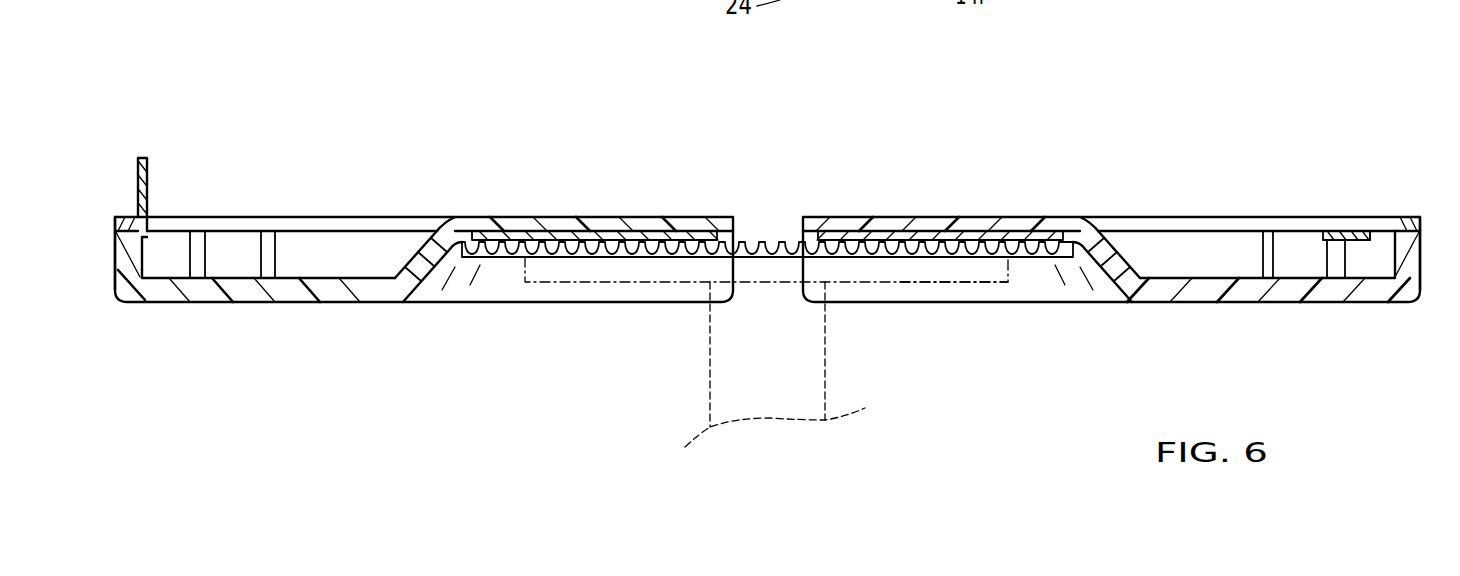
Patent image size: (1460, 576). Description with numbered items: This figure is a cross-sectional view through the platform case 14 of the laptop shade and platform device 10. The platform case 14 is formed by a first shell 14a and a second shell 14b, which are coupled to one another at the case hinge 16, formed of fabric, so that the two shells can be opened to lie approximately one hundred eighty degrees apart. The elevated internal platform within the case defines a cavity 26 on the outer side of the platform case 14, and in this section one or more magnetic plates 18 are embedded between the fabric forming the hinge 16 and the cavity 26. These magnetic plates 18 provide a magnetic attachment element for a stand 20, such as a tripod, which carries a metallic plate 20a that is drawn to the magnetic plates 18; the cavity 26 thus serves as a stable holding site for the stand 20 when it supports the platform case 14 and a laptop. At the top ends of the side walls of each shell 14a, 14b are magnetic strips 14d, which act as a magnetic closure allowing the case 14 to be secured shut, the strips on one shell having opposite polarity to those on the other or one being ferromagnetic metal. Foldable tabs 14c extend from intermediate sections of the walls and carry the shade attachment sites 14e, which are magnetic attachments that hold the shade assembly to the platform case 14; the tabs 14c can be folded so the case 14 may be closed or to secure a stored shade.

The laptop shade and platform device 10 is at (309, 88).
The platform case 14 is at (1245, 307).
The first shell 14a is at (288, 302).
The second shell 14b is at (1158, 303).
The tabs 14c is at (148, 197).
The magnetic strips 14d is at (133, 215).
The shade attachment sites 14e is at (147, 190).
The case hinge 16 is at (768, 242).
The magnetic plates 18 is at (603, 232).
The stand 20 is at (690, 350).
The metallic plate 20a is at (932, 273).
The cavity 26 is at (489, 290).